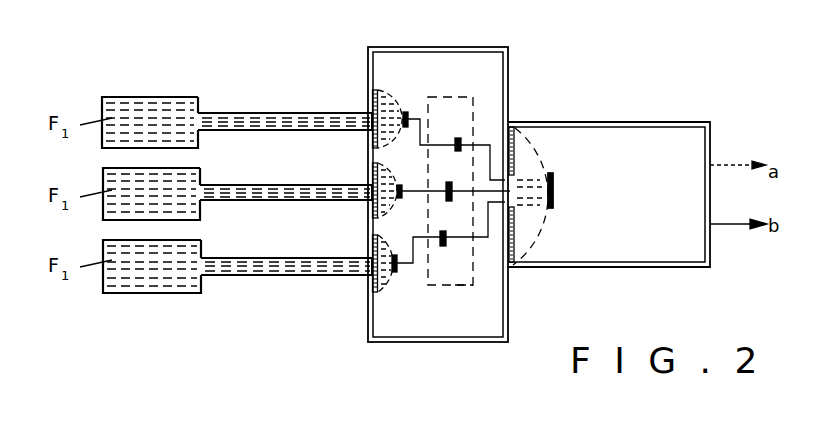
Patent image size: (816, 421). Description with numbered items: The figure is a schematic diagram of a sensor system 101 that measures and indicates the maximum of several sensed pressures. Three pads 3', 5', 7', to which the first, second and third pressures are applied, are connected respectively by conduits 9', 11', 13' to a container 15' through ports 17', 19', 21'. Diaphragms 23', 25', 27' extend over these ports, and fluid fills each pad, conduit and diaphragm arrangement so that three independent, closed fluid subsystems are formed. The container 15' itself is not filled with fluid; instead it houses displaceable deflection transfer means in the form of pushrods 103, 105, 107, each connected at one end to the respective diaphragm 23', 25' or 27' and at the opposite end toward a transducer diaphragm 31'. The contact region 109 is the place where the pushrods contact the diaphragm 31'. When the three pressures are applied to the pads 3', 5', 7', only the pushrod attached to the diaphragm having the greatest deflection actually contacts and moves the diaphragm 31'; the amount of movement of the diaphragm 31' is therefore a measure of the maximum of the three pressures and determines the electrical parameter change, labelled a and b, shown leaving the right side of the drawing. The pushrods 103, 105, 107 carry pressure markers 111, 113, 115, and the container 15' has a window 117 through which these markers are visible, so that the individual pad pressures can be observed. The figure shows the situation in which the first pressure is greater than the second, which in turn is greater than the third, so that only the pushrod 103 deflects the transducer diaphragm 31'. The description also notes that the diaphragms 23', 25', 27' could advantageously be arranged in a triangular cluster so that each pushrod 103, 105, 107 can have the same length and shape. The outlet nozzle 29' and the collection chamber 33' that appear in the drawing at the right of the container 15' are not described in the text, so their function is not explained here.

The pad 3' is at (166, 103).
The pad 5' is at (166, 182).
The pad 7' is at (167, 256).
The conduit 9' is at (285, 104).
The conduit 11' is at (286, 173).
The conduit 13' is at (286, 249).
The container 15' is at (481, 174).
The port 17' is at (338, 132).
The port 19' is at (338, 176).
The port 21' is at (341, 286).
The diaphragm 23' is at (358, 113).
The diaphragm 25' is at (355, 204).
The diaphragm 27' is at (355, 294).
The outlet nozzle 29' is at (552, 196).
The transducer diaphragm 31' is at (610, 187).
The collection chamber 33' is at (612, 172).
The sensor system 101 is at (253, 291).
The pushrod 103 is at (477, 143).
The pushrod 105 is at (495, 192).
The pushrod 107 is at (478, 238).
The contact region 109 is at (553, 192).
The pressure marker 111 is at (457, 138).
The pressure marker 113 is at (449, 201).
The pressure marker 115 is at (442, 246).
The window 117 is at (467, 286).